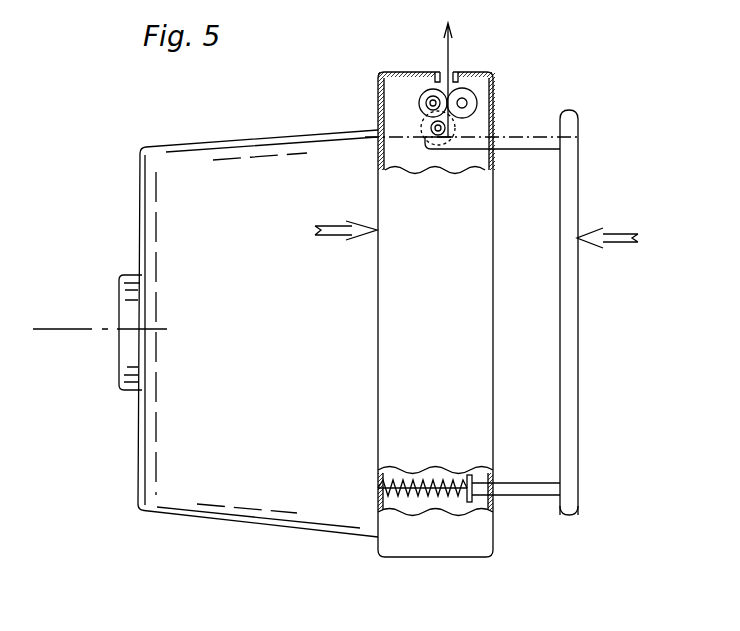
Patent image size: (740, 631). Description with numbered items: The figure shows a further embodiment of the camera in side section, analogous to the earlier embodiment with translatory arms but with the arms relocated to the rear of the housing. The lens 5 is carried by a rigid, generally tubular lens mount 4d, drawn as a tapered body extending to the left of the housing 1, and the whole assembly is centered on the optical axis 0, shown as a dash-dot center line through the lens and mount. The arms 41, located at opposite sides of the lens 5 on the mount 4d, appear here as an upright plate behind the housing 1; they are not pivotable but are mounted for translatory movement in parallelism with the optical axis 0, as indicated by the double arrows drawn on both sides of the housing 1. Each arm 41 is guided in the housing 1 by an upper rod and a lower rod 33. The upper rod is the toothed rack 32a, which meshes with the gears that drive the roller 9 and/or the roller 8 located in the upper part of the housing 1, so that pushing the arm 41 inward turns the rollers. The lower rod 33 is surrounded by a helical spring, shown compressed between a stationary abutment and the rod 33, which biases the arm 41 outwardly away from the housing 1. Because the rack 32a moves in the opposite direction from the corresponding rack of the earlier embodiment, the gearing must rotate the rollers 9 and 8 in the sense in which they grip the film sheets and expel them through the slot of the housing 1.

The optical axis 0 is at (92, 327).
The lens 5 is at (123, 302).
The lens mount 4d is at (183, 493).
The housing 1 is at (478, 268).
The roller 9 is at (432, 92).
The roller 8 is at (465, 90).
The rack 32a is at (503, 142).
The arm 41 is at (572, 383).
The lower rod 33 is at (527, 489).